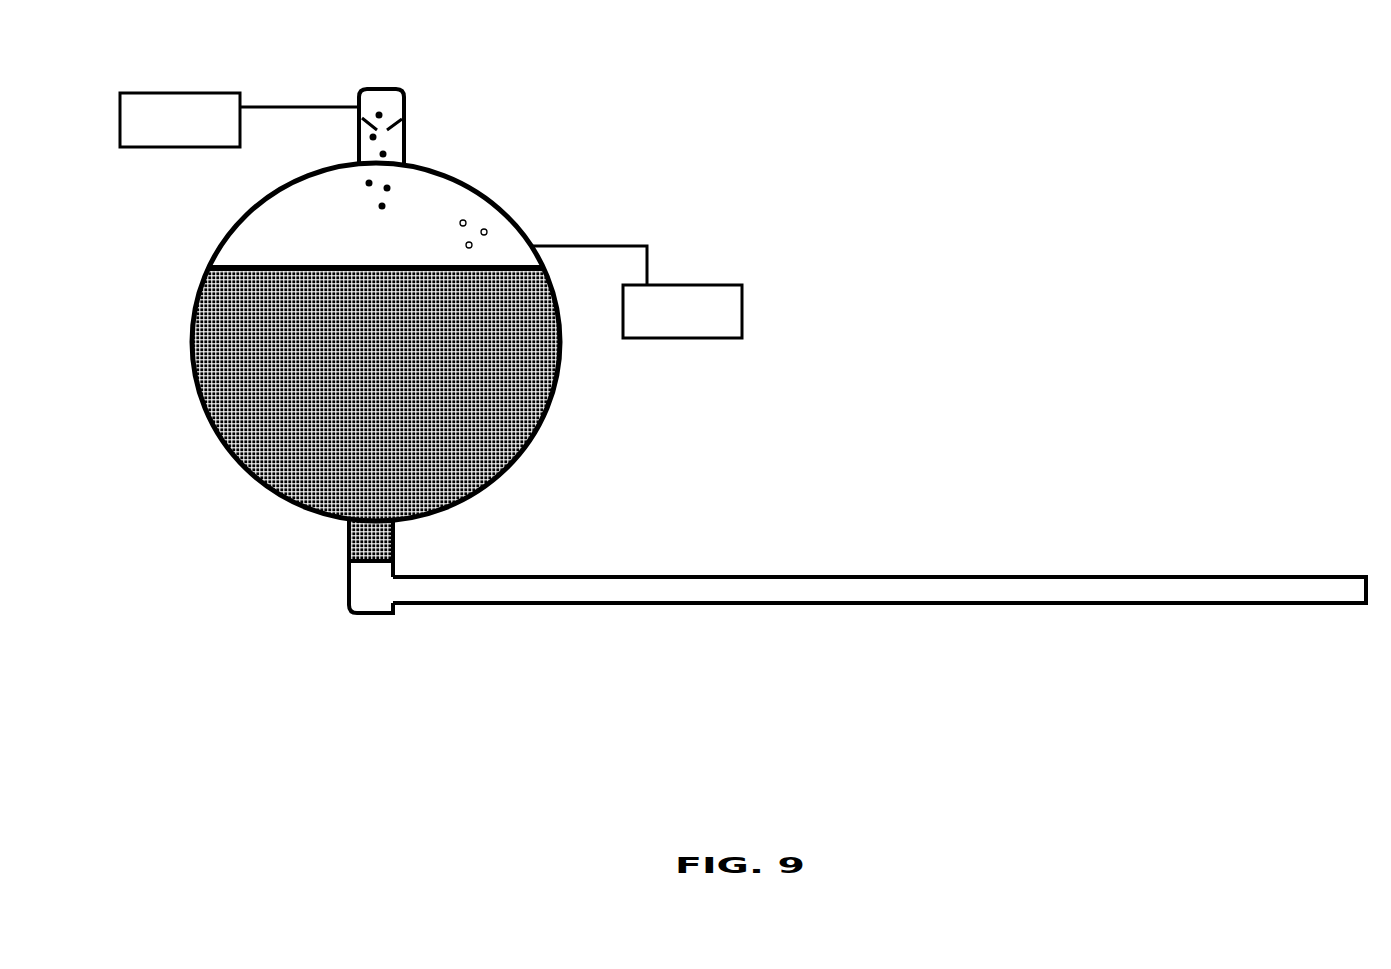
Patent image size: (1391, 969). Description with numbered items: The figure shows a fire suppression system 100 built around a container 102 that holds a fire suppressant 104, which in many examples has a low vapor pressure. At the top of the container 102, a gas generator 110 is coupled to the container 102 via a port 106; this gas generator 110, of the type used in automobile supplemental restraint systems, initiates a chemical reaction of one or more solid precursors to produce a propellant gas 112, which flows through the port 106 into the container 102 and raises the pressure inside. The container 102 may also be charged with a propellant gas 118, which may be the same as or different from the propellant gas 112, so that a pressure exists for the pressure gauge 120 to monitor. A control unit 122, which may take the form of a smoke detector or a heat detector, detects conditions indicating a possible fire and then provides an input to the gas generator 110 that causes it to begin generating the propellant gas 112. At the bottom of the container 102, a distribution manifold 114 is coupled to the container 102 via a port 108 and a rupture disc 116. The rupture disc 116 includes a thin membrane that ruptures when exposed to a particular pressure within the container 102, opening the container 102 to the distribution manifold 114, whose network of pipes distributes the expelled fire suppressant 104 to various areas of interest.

The fire suppression system 100 is at (1085, 52).
The container 102 is at (521, 228).
The fire suppressant 104 is at (517, 402).
The port 106 is at (399, 174).
The port 108 is at (371, 526).
The gas generator 110 is at (405, 97).
The propellant gas 112 is at (356, 204).
The distribution manifold 114 is at (690, 604).
The rupture disc 116 is at (368, 558).
The propellant gas 118 is at (450, 239).
The pressure gauge 120 is at (645, 338).
The control unit 122 is at (217, 148).